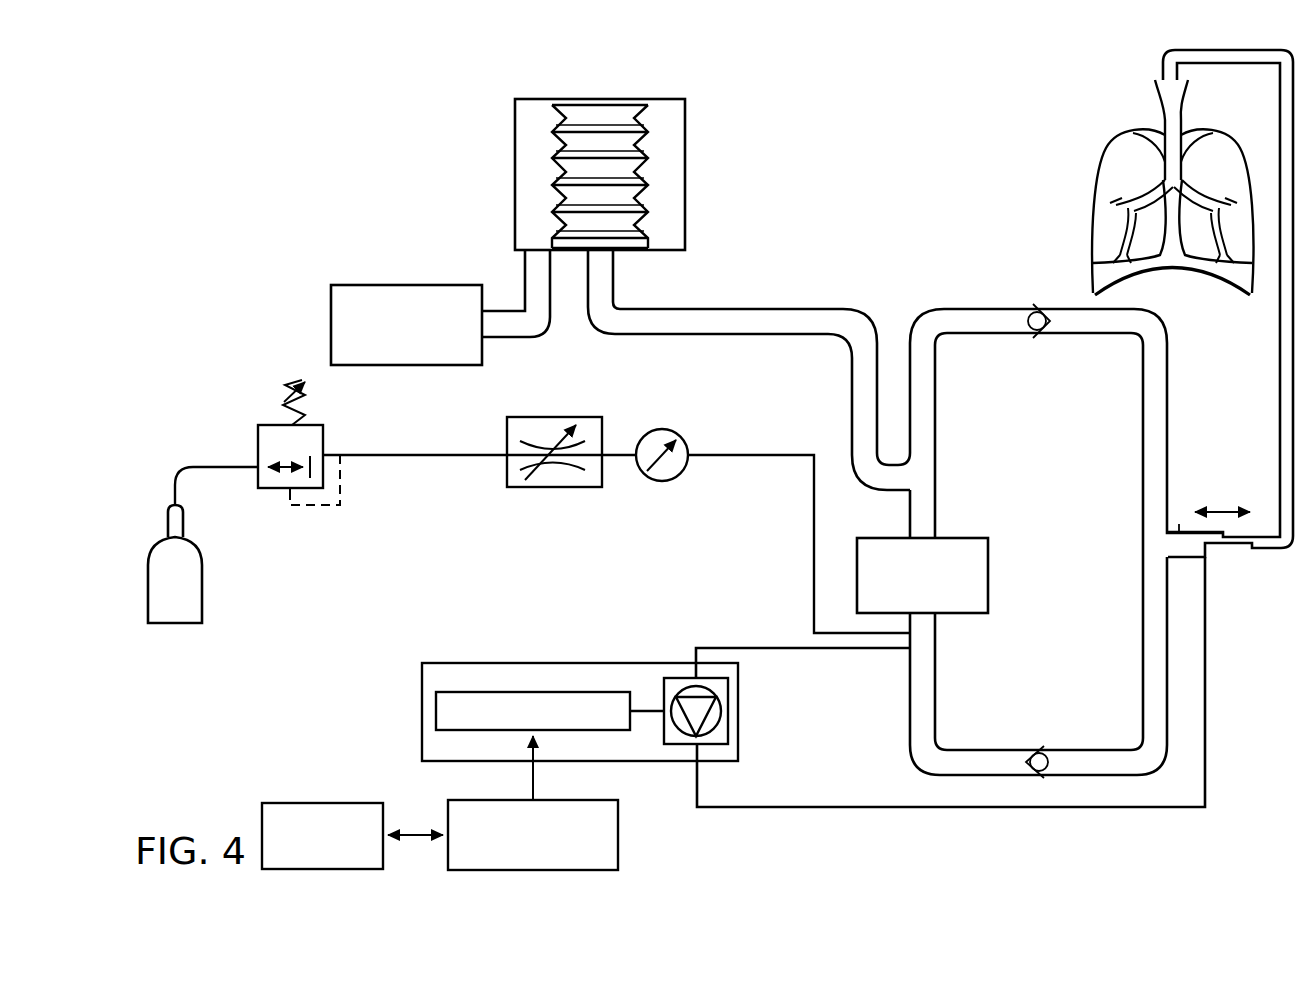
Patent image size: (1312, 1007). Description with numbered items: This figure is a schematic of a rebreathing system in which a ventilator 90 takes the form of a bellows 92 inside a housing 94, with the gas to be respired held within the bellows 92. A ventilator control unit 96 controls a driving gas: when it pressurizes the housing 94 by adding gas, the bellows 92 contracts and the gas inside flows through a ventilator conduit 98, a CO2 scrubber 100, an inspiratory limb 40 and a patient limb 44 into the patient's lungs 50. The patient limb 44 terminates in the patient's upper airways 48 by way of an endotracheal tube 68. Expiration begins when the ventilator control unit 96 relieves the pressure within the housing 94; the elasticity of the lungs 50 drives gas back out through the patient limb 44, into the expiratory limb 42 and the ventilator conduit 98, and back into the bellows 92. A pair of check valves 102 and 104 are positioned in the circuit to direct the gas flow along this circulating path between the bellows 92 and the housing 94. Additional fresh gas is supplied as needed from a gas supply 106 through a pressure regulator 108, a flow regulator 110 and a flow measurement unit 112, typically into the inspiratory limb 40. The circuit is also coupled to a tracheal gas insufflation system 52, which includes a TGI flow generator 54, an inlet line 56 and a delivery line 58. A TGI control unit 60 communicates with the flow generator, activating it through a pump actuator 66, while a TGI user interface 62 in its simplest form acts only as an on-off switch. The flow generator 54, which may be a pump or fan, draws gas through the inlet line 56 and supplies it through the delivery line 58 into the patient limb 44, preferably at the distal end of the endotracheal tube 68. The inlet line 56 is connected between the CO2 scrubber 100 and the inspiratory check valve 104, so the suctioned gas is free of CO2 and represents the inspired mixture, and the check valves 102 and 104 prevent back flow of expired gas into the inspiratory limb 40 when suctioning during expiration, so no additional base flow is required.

The inspiratory limb 40 is at (1107, 752).
The expiratory limb 42 is at (1155, 368).
The patient limb 44 is at (1178, 537).
The upper airways 48 is at (1163, 150).
The lungs 50 is at (1050, 214).
The tracheal gas insufflation delivery system 52 is at (541, 615).
The TGI flow generator 54 is at (740, 716).
The inlet line 56 is at (748, 645).
The delivery line 58 is at (823, 808).
The TGI control unit 60 is at (450, 810).
The TGI user interface 62 is at (322, 803).
The pump actuator 66 is at (480, 692).
The endotracheal tube 68 is at (1262, 546).
The ventilator 90 is at (762, 108).
The bellows 92 is at (643, 182).
The housing 94 is at (686, 137).
The ventilator control unit 96 is at (407, 285).
The ventilator conduit 98 is at (726, 307).
The CO2 scrubber 100 is at (988, 573).
The check valve 102 is at (1041, 333).
The inspiratory check valve 104 is at (1020, 752).
The gas supply 106 is at (202, 582).
The pressure regulator 108 is at (275, 420).
The flow regulator 110 is at (555, 488).
The flow measurement unit 112 is at (660, 482).